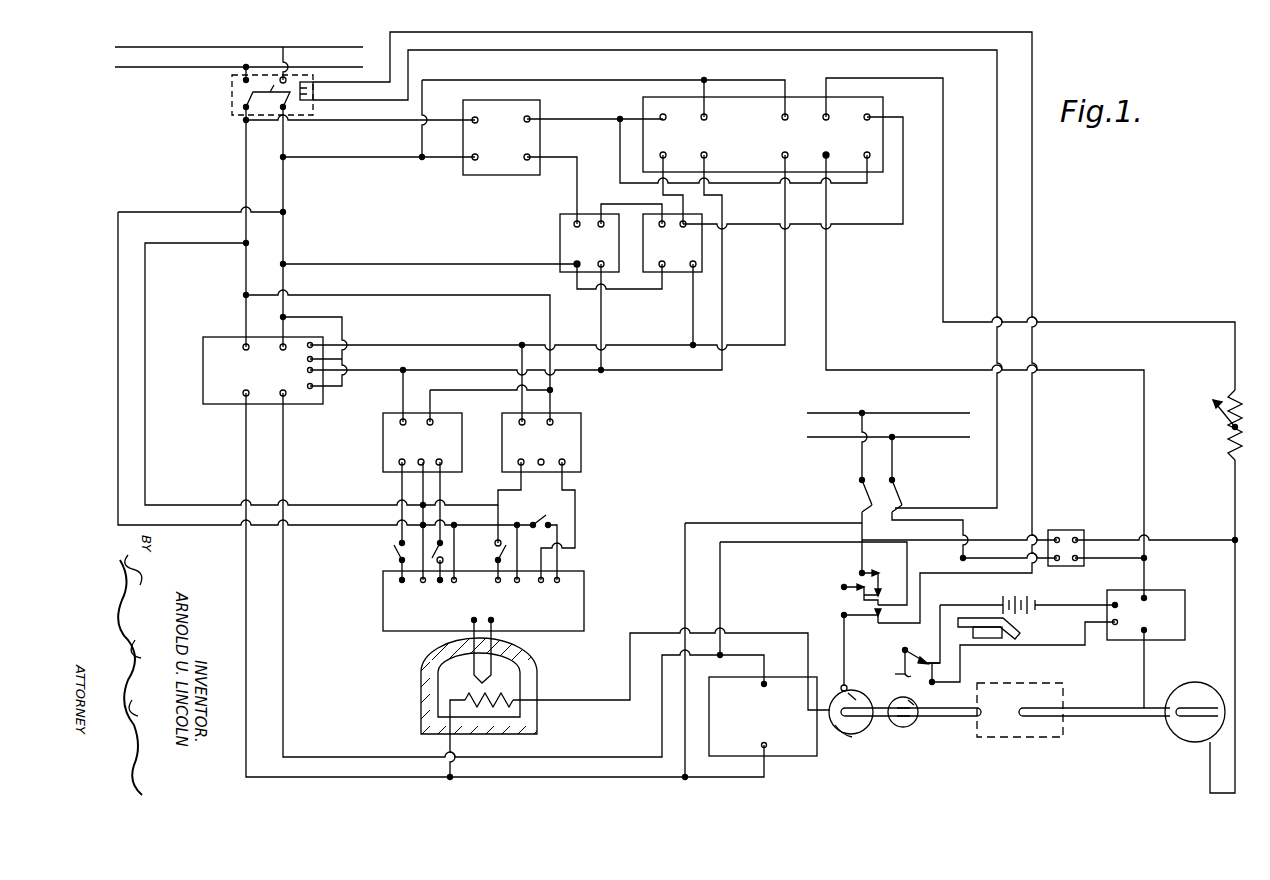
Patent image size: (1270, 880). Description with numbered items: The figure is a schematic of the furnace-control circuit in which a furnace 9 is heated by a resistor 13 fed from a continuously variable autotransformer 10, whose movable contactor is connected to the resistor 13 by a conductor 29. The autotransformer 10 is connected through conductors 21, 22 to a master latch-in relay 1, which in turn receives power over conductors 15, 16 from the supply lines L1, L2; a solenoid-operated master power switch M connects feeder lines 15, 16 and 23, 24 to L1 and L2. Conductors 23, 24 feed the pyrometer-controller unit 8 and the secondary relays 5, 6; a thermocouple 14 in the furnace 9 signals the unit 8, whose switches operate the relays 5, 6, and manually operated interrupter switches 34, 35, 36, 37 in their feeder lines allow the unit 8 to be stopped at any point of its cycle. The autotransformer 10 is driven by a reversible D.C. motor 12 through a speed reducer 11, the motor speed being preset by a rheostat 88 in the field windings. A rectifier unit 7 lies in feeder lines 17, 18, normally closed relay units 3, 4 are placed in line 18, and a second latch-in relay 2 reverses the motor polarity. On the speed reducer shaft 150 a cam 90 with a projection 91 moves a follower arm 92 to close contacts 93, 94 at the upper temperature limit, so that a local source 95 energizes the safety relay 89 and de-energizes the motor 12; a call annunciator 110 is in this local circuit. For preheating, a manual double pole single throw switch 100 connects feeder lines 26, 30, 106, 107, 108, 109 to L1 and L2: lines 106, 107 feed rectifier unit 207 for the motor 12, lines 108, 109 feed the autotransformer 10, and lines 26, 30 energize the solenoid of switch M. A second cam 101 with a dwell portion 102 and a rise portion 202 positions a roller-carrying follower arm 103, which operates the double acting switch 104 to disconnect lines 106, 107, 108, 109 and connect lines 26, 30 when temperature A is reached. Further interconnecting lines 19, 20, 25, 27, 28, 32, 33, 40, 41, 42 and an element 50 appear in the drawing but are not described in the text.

The power line L1 is at (348, 47).
The power line L2 is at (352, 70).
The master power operating switch M is at (232, 92).
The master relay switch 1 is at (293, 400).
The second latch-in relay 2 is at (797, 100).
The solenoid relay unit 3 is at (560, 228).
The solenoid relay unit 4 is at (682, 268).
The secondary relay 5 is at (382, 433).
The secondary relay 6 is at (582, 438).
The rectifier unit 7 is at (503, 170).
The pyrometer-controller unit 8 is at (584, 586).
The furnace 9 is at (538, 670).
The autotransformer 10 is at (792, 748).
The speed reducer 11 is at (1025, 688).
The D.C. motor 12 is at (1197, 690).
The resistor 13 is at (493, 705).
The thermocouple 14 is at (466, 650).
The conductor 15 is at (245, 158).
The conductor 16 is at (282, 182).
The feeder line 17 is at (338, 117).
The feeder line 18 is at (336, 151).
The conductor 19 is at (345, 259).
The conductor 20 is at (343, 289).
The conductor 21 is at (245, 575).
The conductor 22 is at (284, 575).
The conductor 23 is at (117, 330).
The conductor 24 is at (146, 330).
The conductor 25 is at (600, 74).
The feeder line 26 is at (996, 182).
The conductor 27 is at (942, 262).
The conductor 28 is at (827, 290).
The conductor 29 is at (760, 633).
The feeder line 30 is at (1034, 182).
The conductor 32 is at (678, 372).
The conductor 33 is at (767, 346).
The interrupter switch 34 is at (396, 547).
The interrupter switch 35 is at (446, 553).
The interrupter switch 36 is at (506, 548).
The interrupter switch 37 is at (542, 517).
The conductor 40 is at (641, 290).
The conductor 41 is at (863, 224).
The relay contact 42 is at (666, 158).
The contact arm 50 is at (905, 650).
The rheostat 88 is at (1198, 430).
The safety relay 89 is at (1163, 592).
The cam 90 is at (906, 727).
The projection 91 is at (916, 702).
The follower arm 92 is at (898, 674).
The switch contact 93 is at (926, 660).
The switch contact 94 is at (934, 681).
The local source 95 is at (1018, 598).
The double pole single throw switch 100 is at (866, 497).
The second cam 101 is at (855, 738).
The dwell portion 102 is at (858, 696).
The follower arm 103 is at (847, 684).
The switch 104 is at (860, 586).
The feeder line 106 is at (1108, 540).
The feeder line 107 is at (1116, 560).
The feeder line 108 is at (746, 523).
The feeder line 109 is at (766, 543).
The call annunciator 110 is at (972, 618).
The speed reducer shaft 150 is at (1114, 717).
The rise portion 202 is at (848, 734).
The rectifier unit 207 is at (1068, 524).